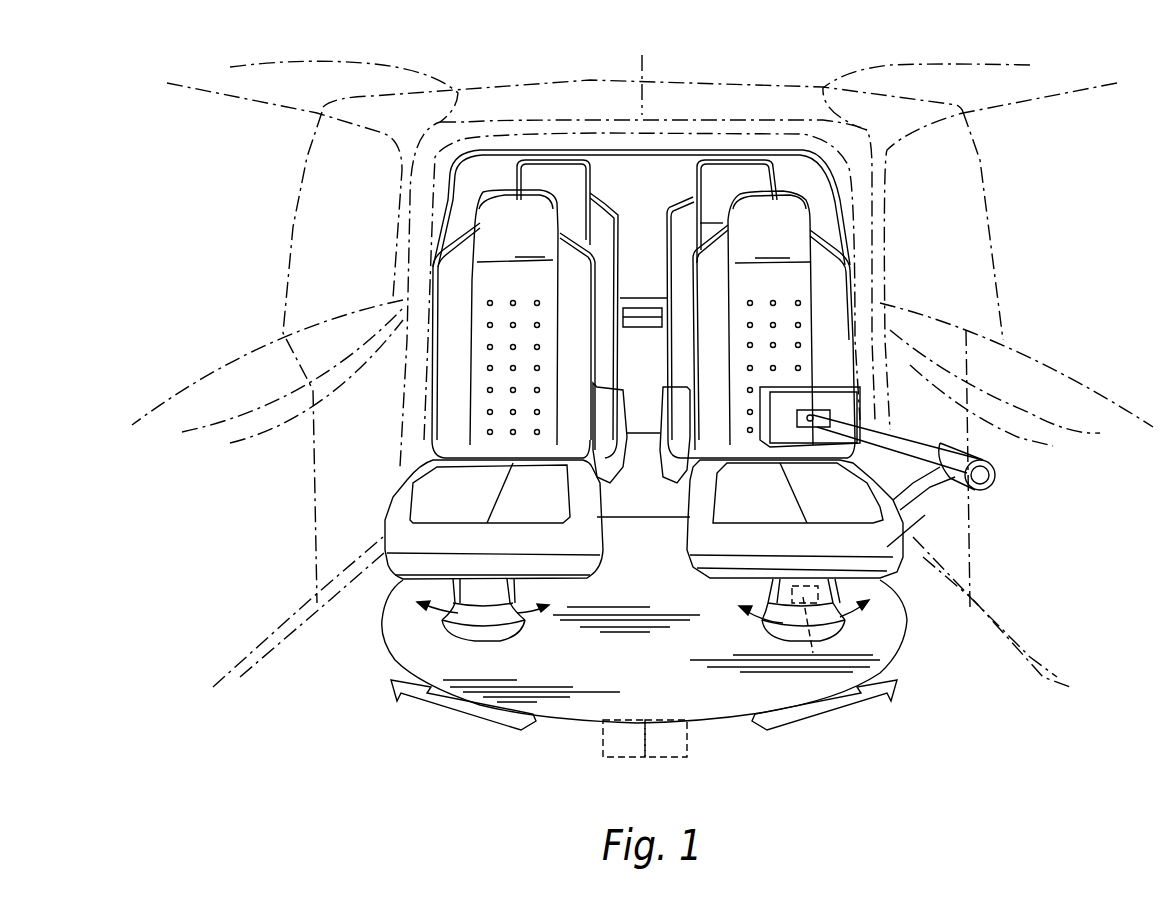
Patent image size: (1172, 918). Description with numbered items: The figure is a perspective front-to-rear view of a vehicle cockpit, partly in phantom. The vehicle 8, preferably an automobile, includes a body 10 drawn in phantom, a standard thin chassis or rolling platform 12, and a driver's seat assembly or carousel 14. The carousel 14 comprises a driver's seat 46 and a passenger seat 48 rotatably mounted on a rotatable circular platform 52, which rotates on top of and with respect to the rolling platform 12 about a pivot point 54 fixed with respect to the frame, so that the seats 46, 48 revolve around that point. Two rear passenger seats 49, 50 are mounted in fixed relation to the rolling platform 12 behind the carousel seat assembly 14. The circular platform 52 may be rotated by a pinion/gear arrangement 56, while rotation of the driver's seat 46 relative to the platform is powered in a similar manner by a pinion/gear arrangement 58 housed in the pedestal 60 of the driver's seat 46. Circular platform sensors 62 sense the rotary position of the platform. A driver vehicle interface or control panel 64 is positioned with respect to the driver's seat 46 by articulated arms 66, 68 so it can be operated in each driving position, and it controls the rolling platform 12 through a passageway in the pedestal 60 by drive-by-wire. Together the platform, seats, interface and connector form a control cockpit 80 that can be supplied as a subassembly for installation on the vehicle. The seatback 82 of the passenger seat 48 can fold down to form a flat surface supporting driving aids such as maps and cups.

The vehicle 8 is at (1068, 292).
The body 10 is at (990, 200).
The rolling platform 12 is at (1003, 660).
The driver's seat assembly or carousel 14 is at (903, 633).
The driver's seat 46 is at (852, 439).
The passenger seat 48 is at (465, 438).
The rear passenger seat 49 is at (608, 212).
The rear passenger seat 50 is at (730, 170).
The circular platform 52 is at (575, 703).
The pivot point 54 is at (640, 617).
The pinion/gear arrangement 56 is at (613, 758).
The pinion/gear arrangement 58 is at (813, 653).
The pedestal 60 is at (787, 623).
The circular platform sensor 62 is at (667, 757).
The driver vehicle interface or control panel 64 is at (893, 440).
The articulated arm 66 is at (920, 443).
The articulated arm 68 is at (910, 497).
The control cockpit 80 is at (356, 697).
The seatback 82 is at (450, 267).